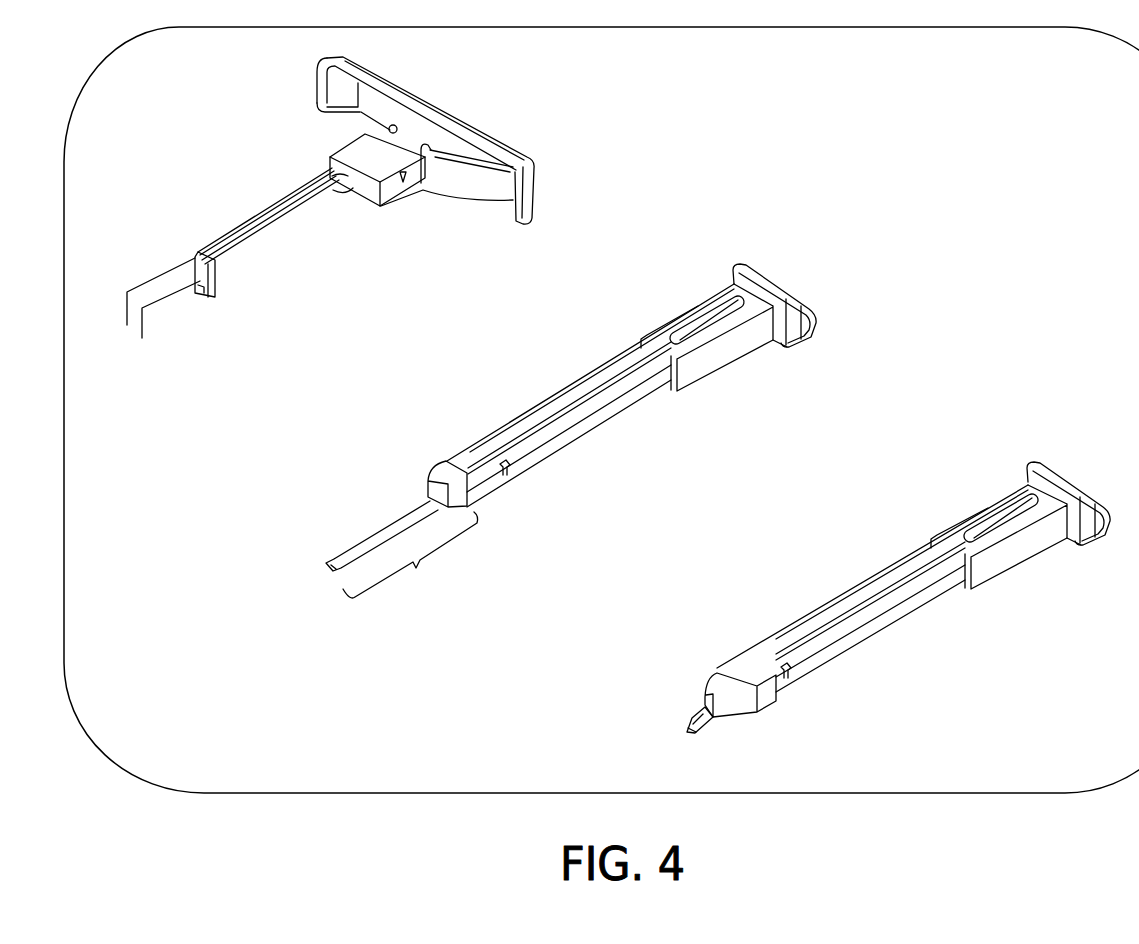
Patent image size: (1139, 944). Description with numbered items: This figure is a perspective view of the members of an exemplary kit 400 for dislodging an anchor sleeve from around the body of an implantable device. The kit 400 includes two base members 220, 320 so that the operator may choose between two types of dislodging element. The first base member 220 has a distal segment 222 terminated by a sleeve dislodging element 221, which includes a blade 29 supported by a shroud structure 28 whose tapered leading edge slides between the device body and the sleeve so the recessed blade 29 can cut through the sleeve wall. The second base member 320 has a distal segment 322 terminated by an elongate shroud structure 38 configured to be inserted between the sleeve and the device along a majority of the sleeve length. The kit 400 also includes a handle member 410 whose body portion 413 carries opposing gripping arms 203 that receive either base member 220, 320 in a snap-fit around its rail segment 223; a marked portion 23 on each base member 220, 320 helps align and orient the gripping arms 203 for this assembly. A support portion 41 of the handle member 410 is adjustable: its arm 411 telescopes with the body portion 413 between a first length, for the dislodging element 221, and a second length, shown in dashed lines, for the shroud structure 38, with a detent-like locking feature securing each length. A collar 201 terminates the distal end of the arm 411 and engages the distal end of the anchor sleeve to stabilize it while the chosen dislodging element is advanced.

The kit 400 is at (990, 91).
The handle member 410 is at (385, 161).
The support portion 41 is at (233, 248).
The body portion 413 is at (400, 161).
The arm 411 is at (281, 229).
The opposing gripping arms 203 is at (366, 210).
The collar 201 is at (218, 278).
The base member 320 is at (571, 423).
The elongate shroud structure 38 is at (347, 547).
The marked portion 23 is at (513, 470).
The rail segment 223 is at (646, 434).
The distal segment 322 is at (410, 555).
The base member 220 is at (863, 605).
The blade 29 is at (688, 706).
The shroud structure 28 is at (697, 710).
The sleeve dislodging element 221 is at (676, 731).
The distal segment 222 is at (763, 714).